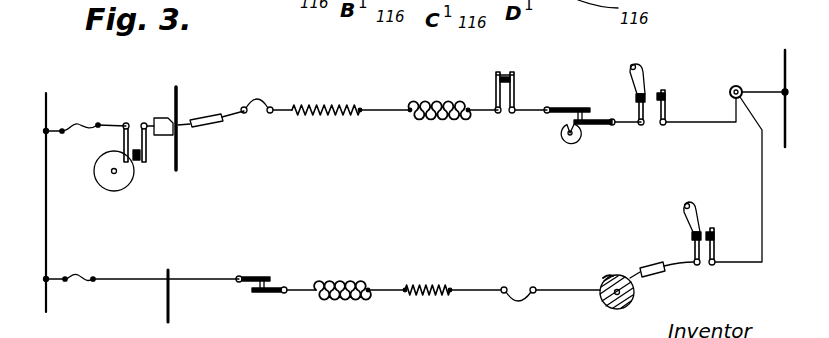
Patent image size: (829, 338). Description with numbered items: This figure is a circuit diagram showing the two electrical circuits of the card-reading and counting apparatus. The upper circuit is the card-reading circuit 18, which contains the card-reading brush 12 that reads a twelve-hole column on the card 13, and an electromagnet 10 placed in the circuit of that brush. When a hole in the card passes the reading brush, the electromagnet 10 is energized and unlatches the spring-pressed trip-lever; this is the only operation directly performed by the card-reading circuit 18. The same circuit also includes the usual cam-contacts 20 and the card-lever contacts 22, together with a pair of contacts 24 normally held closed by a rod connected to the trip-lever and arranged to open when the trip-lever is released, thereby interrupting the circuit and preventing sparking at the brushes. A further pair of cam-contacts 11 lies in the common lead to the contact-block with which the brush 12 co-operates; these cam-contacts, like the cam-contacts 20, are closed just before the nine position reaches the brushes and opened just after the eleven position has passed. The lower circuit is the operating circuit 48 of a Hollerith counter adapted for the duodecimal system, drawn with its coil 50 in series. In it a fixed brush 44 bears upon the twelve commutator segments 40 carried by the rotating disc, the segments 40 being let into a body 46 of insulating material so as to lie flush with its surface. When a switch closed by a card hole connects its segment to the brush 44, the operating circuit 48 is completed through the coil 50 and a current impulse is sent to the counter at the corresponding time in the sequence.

The electromagnet 10 is at (440, 116).
The cam-contacts 11 is at (124, 143).
The card-reading brush 12 is at (208, 130).
The card 13 is at (178, 155).
The card-reading circuit 18 is at (376, 106).
The cam-contacts 20 is at (600, 118).
The card-lever contacts 22 is at (667, 100).
The pair of contacts 24 is at (516, 95).
The commutator segments 40 is at (634, 288).
The brush 44 is at (625, 272).
The body of insulating material 46 is at (604, 281).
The operating circuit 48 is at (390, 283).
The coil 50 is at (343, 276).